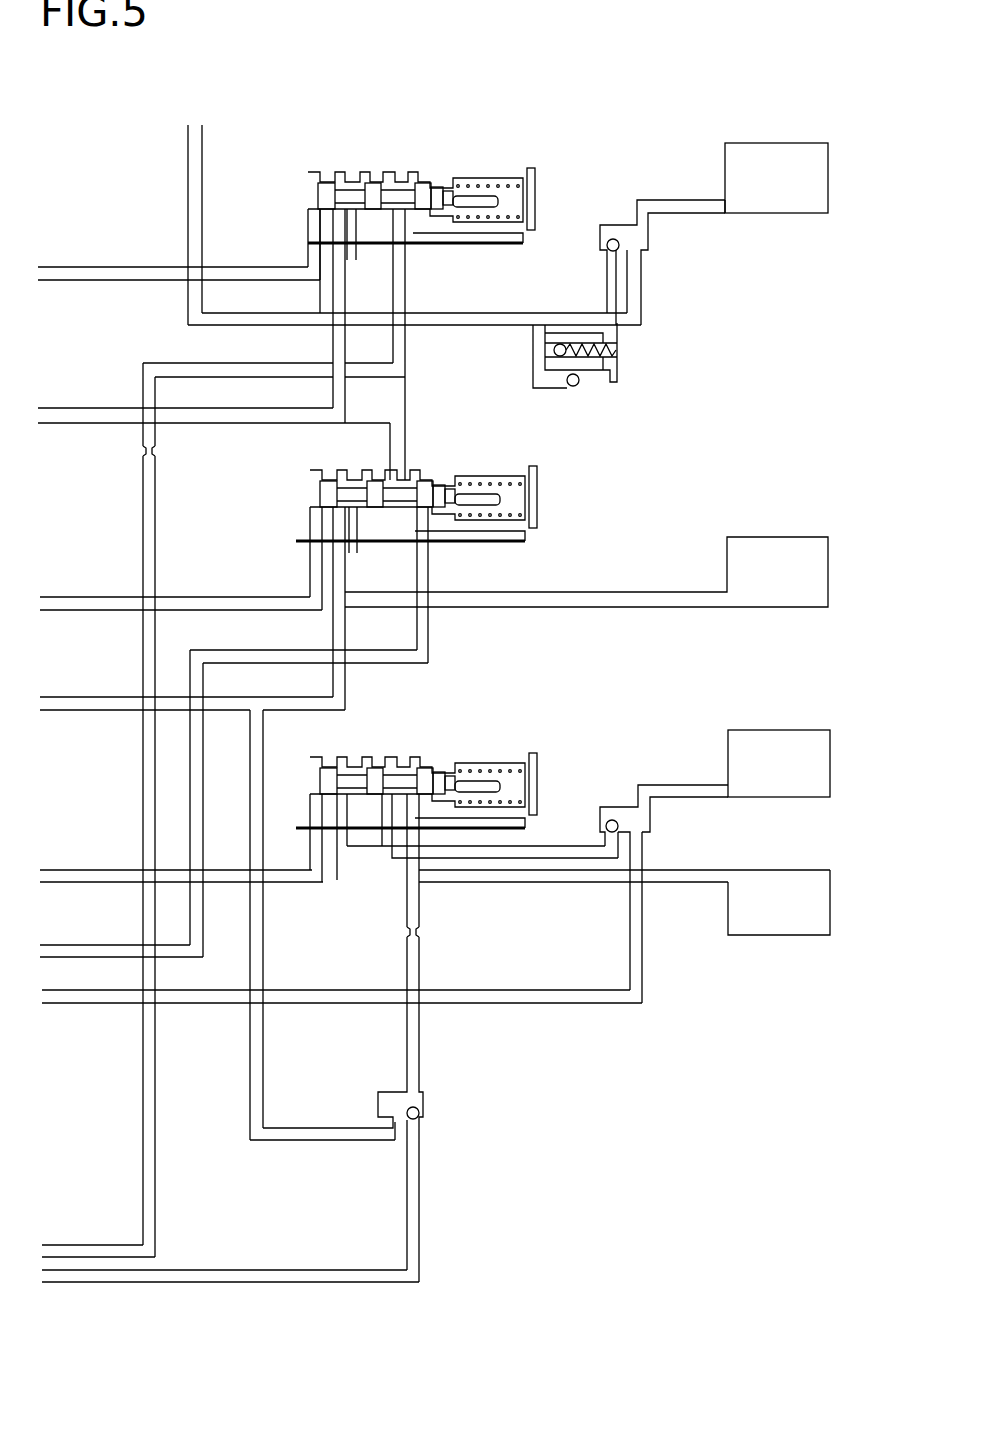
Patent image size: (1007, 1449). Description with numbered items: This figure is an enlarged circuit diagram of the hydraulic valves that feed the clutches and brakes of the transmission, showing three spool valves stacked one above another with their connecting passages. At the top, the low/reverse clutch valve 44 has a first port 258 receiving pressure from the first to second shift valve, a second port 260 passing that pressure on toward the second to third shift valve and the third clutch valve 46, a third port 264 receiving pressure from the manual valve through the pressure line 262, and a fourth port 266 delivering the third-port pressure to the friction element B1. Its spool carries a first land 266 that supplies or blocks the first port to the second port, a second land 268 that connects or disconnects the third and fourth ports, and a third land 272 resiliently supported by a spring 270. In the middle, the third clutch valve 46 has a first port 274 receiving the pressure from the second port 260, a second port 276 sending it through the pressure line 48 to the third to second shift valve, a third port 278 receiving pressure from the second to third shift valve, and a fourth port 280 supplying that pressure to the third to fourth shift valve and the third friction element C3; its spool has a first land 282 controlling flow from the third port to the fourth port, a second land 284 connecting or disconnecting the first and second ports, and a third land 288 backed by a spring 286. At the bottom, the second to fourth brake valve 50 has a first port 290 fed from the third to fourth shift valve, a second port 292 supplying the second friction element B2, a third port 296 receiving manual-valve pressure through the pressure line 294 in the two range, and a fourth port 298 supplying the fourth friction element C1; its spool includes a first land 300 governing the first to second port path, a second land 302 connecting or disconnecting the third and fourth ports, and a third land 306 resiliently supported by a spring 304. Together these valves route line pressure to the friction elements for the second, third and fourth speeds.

The low/reverse clutch valve 44 is at (422, 289).
The third clutch valve 46 is at (416, 567).
The pressure line 48 is at (382, 655).
The second to fourth brake valve 50 is at (444, 816).
The first port 258 is at (312, 217).
The second port 260 is at (335, 223).
The pressure line 262 is at (143, 507).
The third port 264 is at (386, 225).
The fourth port / first land 266 is at (322, 197).
The second land 268 is at (373, 188).
The spring 270 is at (481, 187).
The third land 272 is at (420, 190).
The first port 274 is at (401, 472).
The second port 276 is at (422, 517).
The third port 278 is at (312, 521).
The fourth port 280 is at (340, 522).
The first land 282 is at (327, 488).
The second land 284 is at (380, 488).
The spring 286 is at (510, 513).
The third land 288 is at (430, 487).
The first port 290 is at (318, 805).
The second port 292 is at (341, 806).
The pressure line 294 is at (304, 1276).
The third port 296 is at (411, 803).
The fourth port 298 is at (395, 822).
The first land 300 is at (327, 773).
The second land 302 is at (375, 773).
The spring 304 is at (485, 770).
The third land 306 is at (425, 773).
The second friction element B1 is at (828, 177).
The second friction element B2 is at (830, 762).
The fourth friction element C1 is at (830, 905).
The third friction element C3 is at (828, 570).